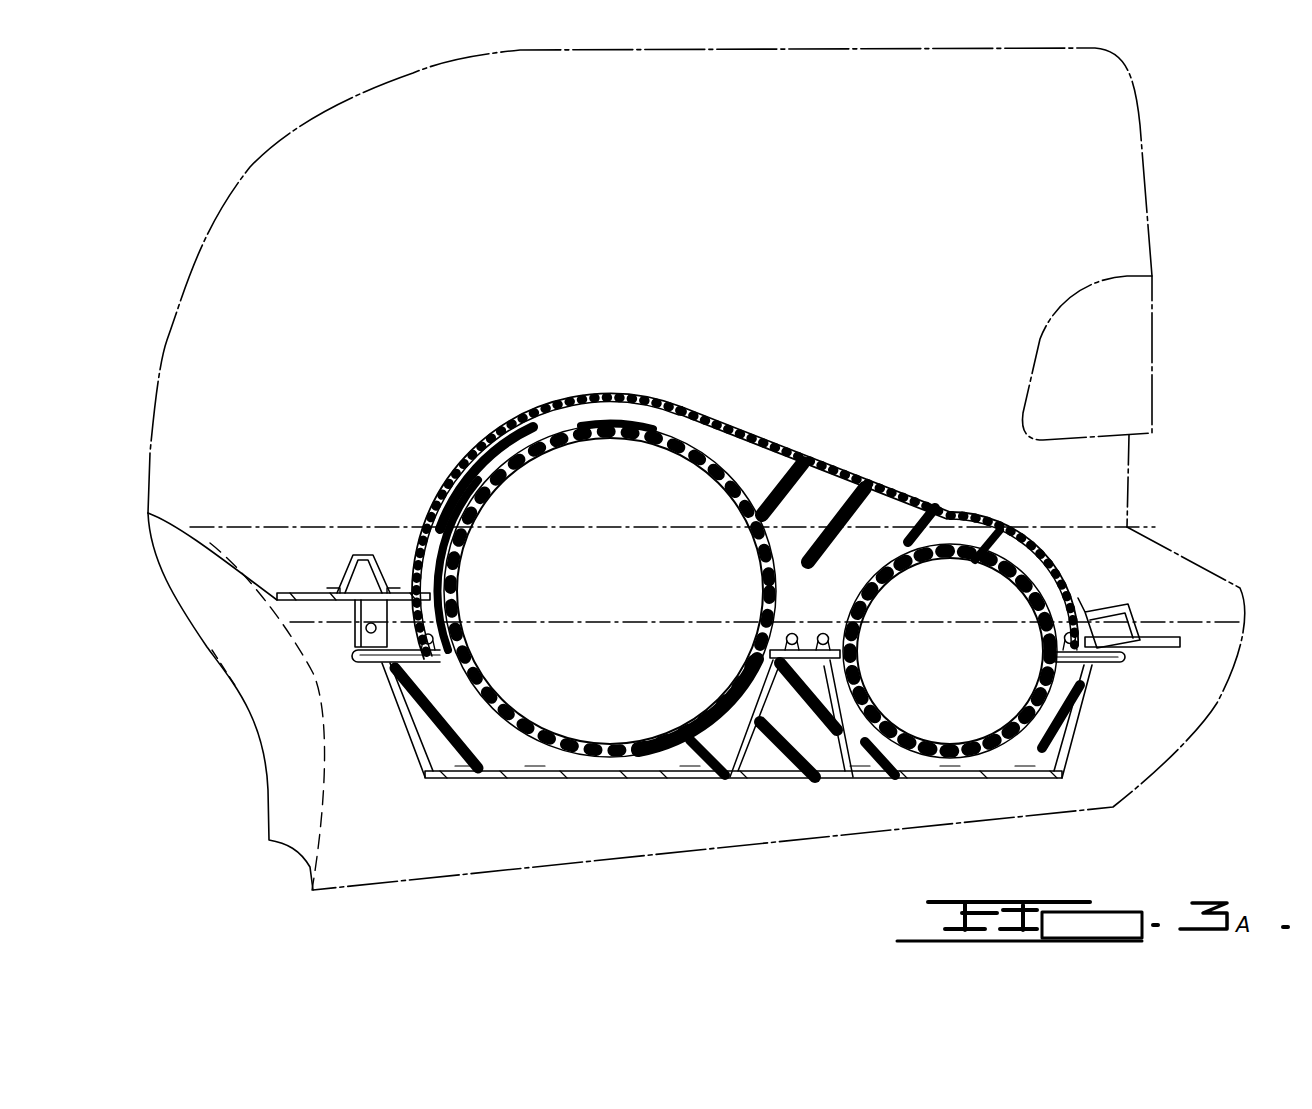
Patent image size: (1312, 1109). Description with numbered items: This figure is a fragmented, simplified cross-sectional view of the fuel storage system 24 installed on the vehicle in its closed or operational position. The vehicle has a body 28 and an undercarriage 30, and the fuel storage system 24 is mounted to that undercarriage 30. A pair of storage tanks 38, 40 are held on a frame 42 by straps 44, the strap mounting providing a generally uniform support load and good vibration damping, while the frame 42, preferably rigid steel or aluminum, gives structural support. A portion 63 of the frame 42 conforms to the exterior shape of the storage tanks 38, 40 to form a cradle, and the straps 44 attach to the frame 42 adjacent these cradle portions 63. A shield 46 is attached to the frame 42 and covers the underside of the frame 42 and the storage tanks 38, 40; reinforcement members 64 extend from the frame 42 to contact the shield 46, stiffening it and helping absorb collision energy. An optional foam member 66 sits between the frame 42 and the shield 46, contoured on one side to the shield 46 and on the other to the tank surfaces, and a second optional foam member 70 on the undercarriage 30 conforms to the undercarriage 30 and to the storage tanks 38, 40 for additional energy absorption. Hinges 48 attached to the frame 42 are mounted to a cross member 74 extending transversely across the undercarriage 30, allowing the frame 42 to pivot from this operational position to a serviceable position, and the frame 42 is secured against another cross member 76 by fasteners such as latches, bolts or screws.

The fuel storage system 24 is at (797, 353).
The body 28 is at (1064, 170).
The undercarriage 30 is at (781, 456).
The storage tank 38 is at (617, 585).
The storage tank 40 is at (977, 684).
The frame 42 is at (385, 672).
The straps 44 is at (600, 403).
The shield 46 is at (350, 658).
The hinges 48 is at (355, 632).
The cradle portion 63 is at (610, 778).
The reinforcement members 64 is at (833, 783).
The foam member 66 is at (437, 762).
The foam member 70 is at (890, 515).
The cross member 74 is at (363, 568).
The cross member 76 is at (1117, 607).